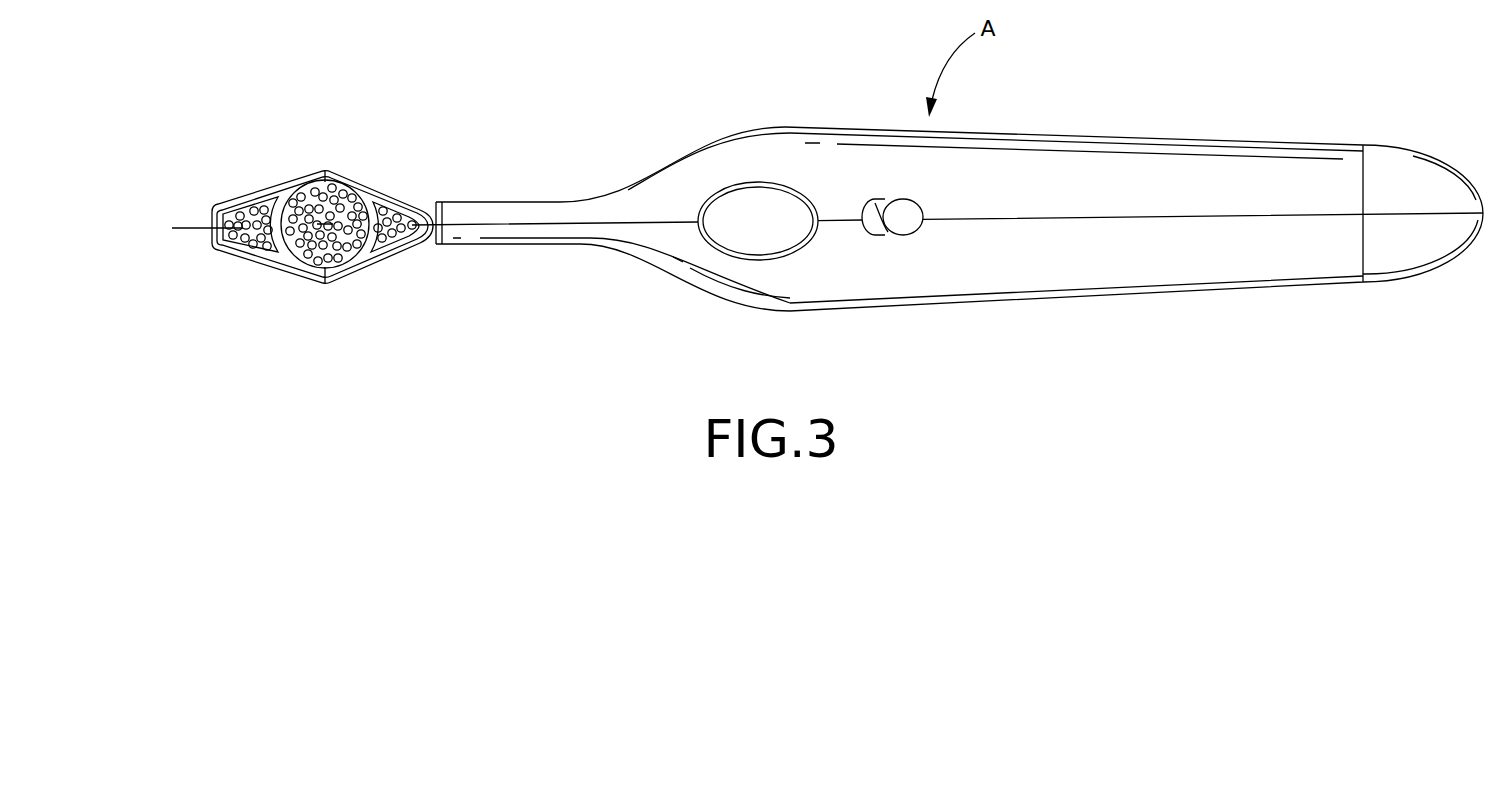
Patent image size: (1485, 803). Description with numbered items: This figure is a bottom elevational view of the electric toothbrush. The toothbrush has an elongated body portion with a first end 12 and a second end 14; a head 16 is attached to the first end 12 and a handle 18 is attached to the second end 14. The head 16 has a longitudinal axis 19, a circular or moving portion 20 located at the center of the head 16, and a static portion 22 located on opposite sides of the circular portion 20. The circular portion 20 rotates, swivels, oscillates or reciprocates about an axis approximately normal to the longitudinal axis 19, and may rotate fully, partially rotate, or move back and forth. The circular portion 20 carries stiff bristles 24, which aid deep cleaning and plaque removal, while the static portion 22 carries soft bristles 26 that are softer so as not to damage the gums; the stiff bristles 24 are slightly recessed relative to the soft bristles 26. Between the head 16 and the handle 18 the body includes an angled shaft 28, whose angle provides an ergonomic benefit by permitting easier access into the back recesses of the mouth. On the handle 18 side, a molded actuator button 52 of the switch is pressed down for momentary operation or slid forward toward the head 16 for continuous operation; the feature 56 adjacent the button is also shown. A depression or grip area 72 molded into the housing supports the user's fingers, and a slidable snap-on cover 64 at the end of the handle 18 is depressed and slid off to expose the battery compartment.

The longitudinal axis 19 is at (183, 227).
The head 16 is at (248, 195).
The circular portion 20 is at (325, 184).
The static portion 22 is at (392, 192).
The stiff bristles 24 is at (325, 267).
The soft bristles 26 is at (233, 253).
The first end 12 is at (433, 250).
The angled shaft 28 is at (497, 231).
The second end 14 is at (1320, 255).
The handle 18 is at (1288, 173).
The slidable snap-on cover 64 is at (1403, 247).
The depression or grip area 72 is at (762, 203).
The molded actuator button 52 is at (903, 207).
The switch base 56 is at (877, 236).